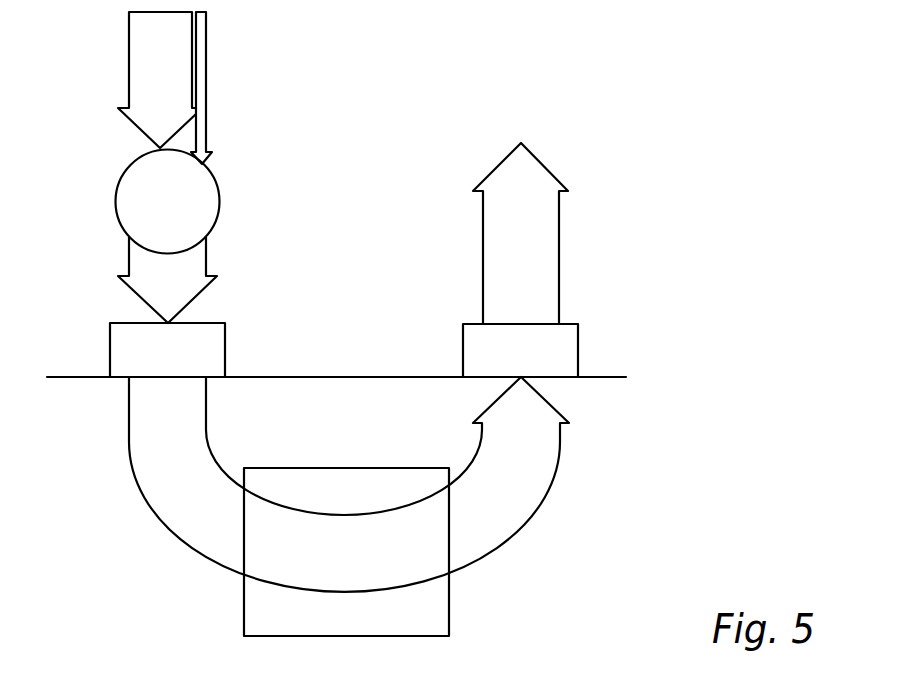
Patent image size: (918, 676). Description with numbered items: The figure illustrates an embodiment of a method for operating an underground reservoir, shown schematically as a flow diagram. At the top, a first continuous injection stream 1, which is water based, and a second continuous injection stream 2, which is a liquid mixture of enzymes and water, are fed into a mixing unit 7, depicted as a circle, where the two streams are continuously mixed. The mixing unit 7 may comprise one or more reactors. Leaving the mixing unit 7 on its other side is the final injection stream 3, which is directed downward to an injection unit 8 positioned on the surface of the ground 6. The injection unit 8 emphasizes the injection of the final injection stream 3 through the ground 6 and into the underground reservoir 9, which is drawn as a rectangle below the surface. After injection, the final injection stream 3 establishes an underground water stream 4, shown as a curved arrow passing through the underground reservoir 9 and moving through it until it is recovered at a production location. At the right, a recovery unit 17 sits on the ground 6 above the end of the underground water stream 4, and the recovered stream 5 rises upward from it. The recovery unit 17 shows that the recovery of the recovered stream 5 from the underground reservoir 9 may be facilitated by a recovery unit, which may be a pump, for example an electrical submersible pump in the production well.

The first continuous injection stream 1 is at (153, 79).
The second continuous injection stream 2 is at (200, 78).
The final injection stream 3 is at (182, 277).
The underground water stream 4 is at (487, 503).
The recovered stream 5 is at (519, 262).
The surface of the ground 6 is at (357, 377).
The mixing unit 7 is at (198, 197).
The injection unit 8 is at (192, 351).
The underground reservoir 9 is at (275, 605).
The recovery unit 17 is at (565, 348).